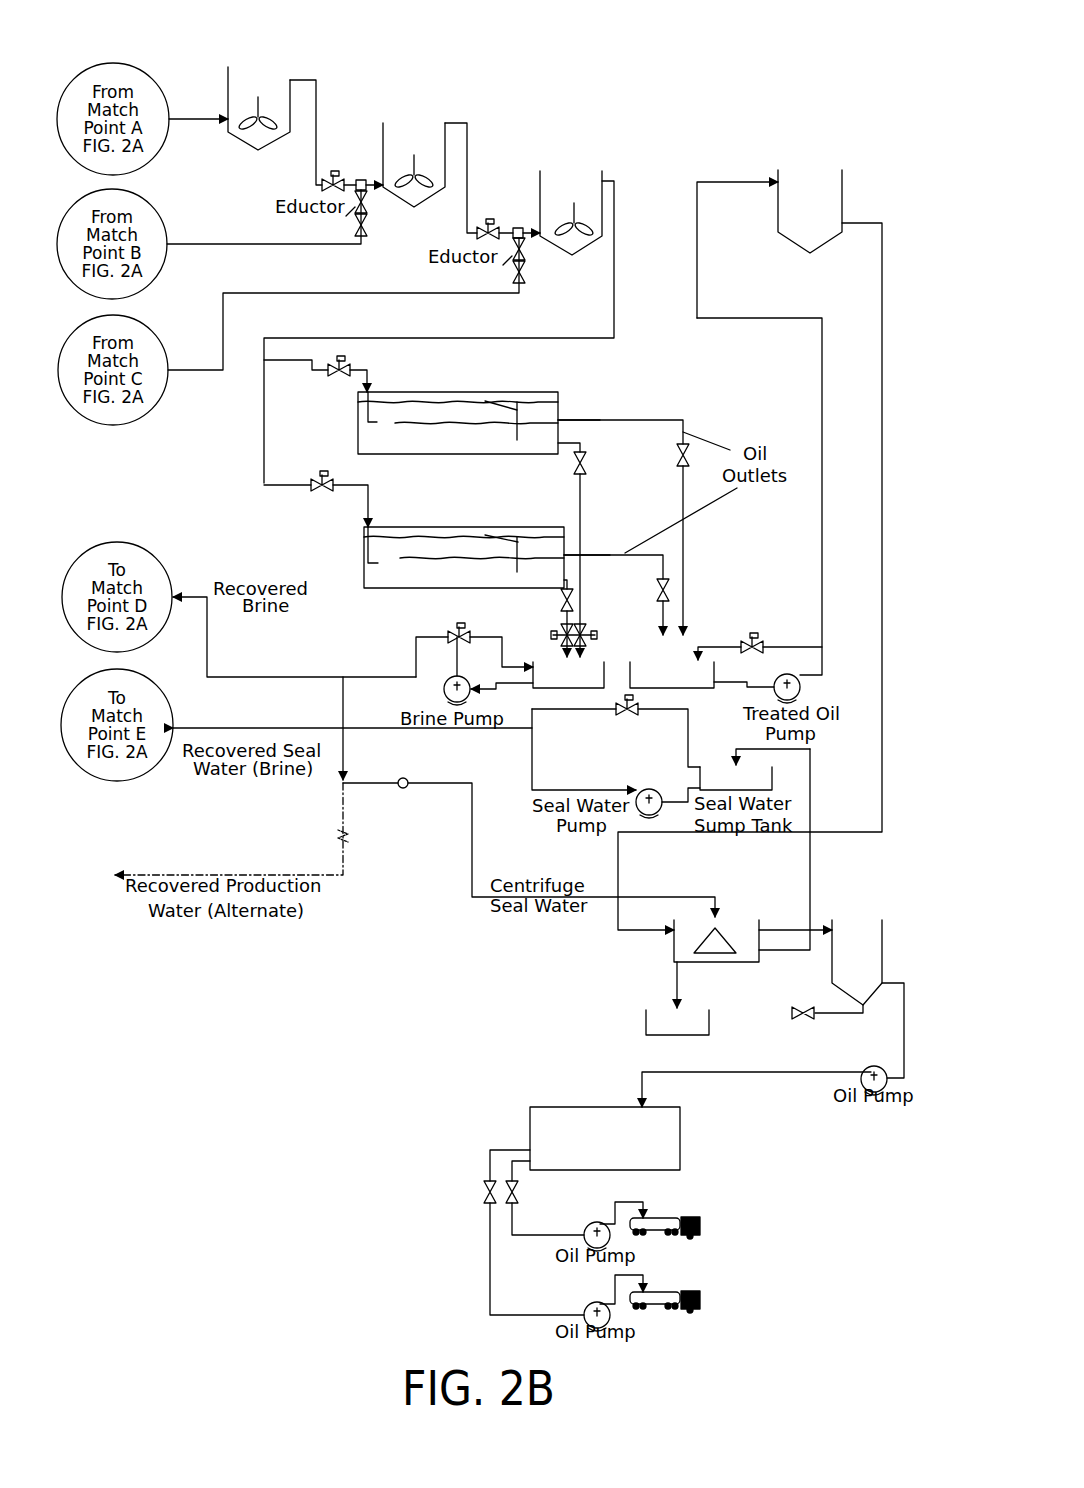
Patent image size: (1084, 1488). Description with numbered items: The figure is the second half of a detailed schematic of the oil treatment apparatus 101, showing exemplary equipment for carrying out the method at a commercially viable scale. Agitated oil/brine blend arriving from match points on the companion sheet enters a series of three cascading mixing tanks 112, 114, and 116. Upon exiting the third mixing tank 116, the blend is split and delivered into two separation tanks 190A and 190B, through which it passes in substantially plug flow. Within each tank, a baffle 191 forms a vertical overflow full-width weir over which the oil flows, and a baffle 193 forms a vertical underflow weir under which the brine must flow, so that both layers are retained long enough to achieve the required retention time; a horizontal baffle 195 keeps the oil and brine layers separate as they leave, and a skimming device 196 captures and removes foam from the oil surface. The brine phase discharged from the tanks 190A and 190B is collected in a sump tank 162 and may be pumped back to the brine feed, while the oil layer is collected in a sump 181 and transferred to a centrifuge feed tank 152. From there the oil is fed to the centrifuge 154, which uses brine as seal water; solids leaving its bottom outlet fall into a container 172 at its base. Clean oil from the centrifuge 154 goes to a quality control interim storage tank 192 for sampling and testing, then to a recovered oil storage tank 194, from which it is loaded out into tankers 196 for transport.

The apparatus 101 is at (708, 95).
The first mixing tank 112 is at (290, 80).
The second mixing tank 114 is at (383, 145).
The third mixing tank 116 is at (543, 186).
The centrifuge feed tank 152 is at (780, 192).
The centrifuge 154 is at (728, 962).
The sump tank 162 is at (562, 680).
The container 172 is at (645, 1013).
The sump 181 is at (652, 685).
The separation tank 190A is at (358, 422).
The separation tank 190B is at (363, 562).
The baffle 191 is at (517, 427).
The quality control interim storage tank 192 is at (895, 940).
The baffle 193 is at (485, 401).
The recovered oil storage tank 194 is at (682, 1138).
The horizontal baffle 195 is at (558, 420).
The skimming device 196 is at (482, 402).